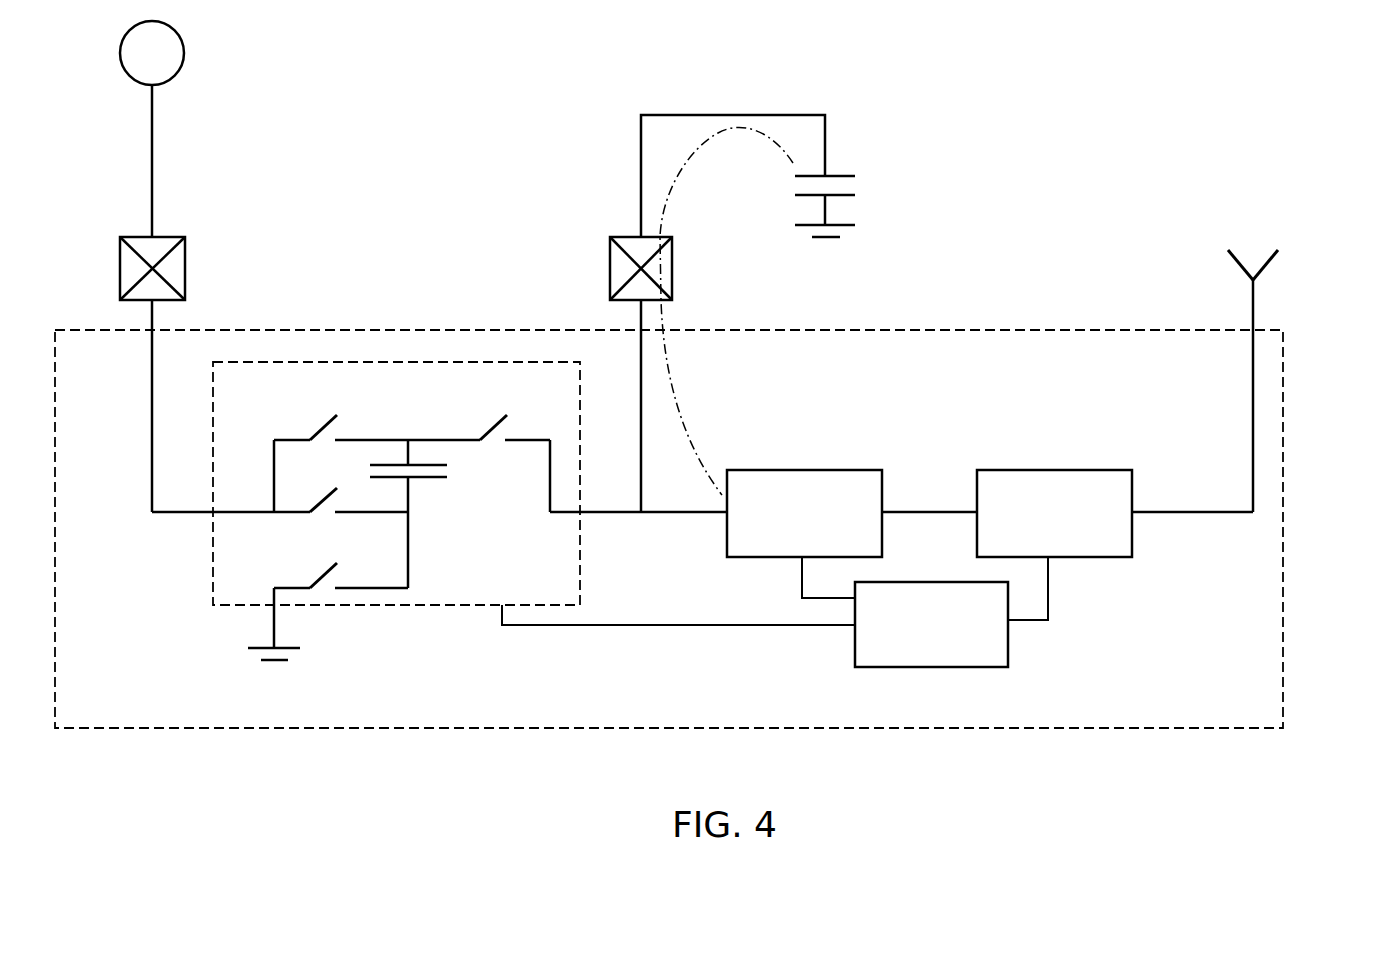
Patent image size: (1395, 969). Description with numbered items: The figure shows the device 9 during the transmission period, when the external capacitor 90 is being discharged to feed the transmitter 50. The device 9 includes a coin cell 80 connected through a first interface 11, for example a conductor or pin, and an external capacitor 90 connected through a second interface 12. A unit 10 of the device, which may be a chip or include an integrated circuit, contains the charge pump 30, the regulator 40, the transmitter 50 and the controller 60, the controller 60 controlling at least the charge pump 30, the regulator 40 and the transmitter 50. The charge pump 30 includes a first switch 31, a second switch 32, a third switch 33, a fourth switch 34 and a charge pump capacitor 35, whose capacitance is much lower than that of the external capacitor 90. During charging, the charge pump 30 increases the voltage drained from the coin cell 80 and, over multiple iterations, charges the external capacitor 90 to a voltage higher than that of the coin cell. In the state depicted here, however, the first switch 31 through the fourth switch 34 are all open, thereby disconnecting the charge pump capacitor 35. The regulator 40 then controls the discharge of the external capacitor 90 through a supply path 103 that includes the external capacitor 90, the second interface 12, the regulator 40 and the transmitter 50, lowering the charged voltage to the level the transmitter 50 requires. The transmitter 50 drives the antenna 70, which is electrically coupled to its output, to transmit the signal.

The device 9 is at (455, 817).
The unit 10 is at (130, 683).
The first interface 11 is at (120, 262).
The second interface 12 is at (610, 262).
The charge pump 30 is at (534, 511).
The first switch 31 is at (325, 425).
The second switch 32 is at (316, 499).
The third switch 33 is at (328, 575).
The fourth switch 34 is at (490, 425).
The charge pump capacitor 35 is at (432, 480).
The regulator 40 is at (789, 526).
The transmitter 50 is at (1039, 526).
The controller 60 is at (916, 638).
The antenna 70 is at (1278, 262).
The coin cell 80 is at (137, 67).
The external capacitor 90 is at (838, 172).
The supply path 103 is at (708, 132).